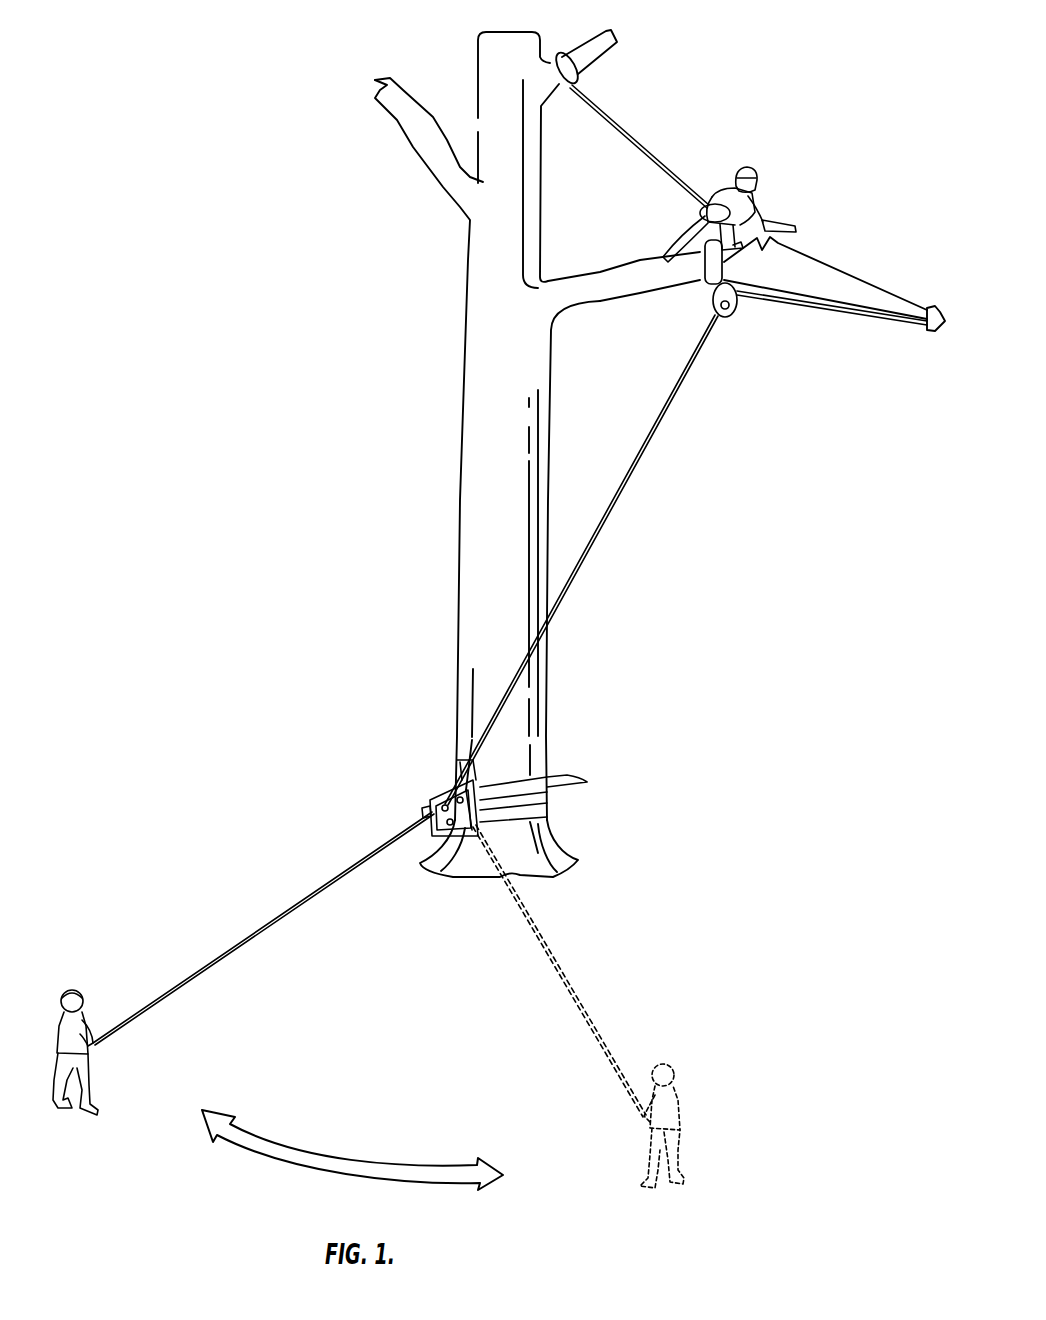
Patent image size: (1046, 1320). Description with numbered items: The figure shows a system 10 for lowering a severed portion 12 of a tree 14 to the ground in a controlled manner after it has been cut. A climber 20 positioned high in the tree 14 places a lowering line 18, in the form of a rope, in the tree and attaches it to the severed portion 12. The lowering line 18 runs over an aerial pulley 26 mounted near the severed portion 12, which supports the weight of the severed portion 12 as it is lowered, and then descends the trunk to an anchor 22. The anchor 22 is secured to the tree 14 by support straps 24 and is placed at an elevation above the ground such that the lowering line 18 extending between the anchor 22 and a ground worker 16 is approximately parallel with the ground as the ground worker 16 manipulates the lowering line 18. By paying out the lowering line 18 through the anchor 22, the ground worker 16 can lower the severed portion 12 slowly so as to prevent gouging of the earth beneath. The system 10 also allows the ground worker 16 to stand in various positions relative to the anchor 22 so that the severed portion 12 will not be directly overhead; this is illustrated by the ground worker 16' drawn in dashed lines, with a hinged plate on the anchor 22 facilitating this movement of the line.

The system 10 is at (250, 445).
The severed portion 12 is at (843, 273).
The tree 14 is at (467, 316).
The ground worker 16 is at (75, 1019).
The ground worker 16' is at (681, 1100).
The lowering line 18 is at (634, 471).
The climber 20 is at (743, 168).
The anchor 22 is at (440, 790).
The support straps 24 is at (588, 783).
The aerial pulley 26 is at (728, 318).